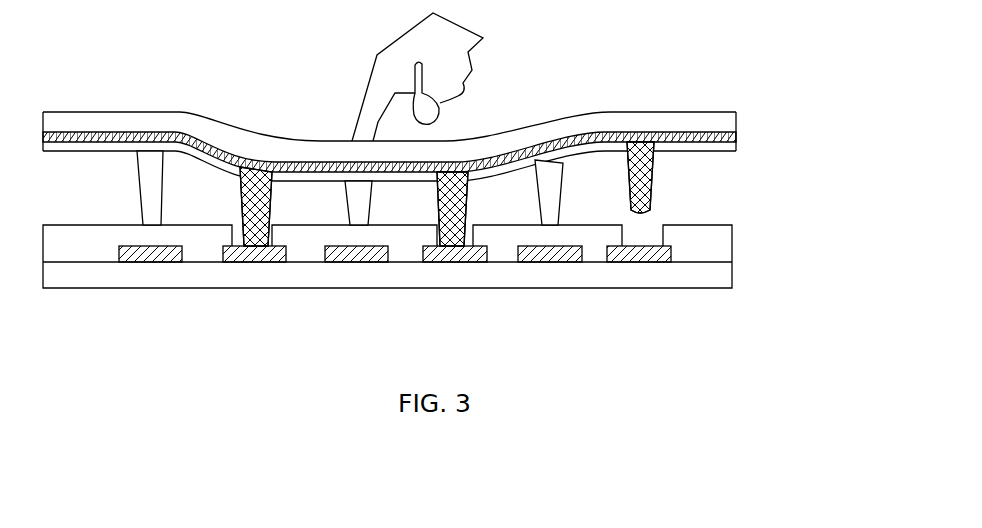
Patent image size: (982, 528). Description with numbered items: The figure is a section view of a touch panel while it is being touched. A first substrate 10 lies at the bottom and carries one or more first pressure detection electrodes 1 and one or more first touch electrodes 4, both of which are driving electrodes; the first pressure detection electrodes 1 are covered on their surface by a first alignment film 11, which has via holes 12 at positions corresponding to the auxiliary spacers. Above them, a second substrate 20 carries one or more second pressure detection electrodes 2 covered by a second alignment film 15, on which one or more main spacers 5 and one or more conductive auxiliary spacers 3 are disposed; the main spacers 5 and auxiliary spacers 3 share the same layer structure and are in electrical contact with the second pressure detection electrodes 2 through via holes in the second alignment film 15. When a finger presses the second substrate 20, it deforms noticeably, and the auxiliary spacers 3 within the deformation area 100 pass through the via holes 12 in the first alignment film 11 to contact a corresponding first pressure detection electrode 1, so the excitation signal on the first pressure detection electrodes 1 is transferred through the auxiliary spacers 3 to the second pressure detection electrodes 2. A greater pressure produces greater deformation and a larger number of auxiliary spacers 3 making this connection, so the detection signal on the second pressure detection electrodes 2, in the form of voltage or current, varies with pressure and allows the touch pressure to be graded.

The deformation area 100 is at (501, 99).
The second substrate 20 is at (703, 118).
The second pressure detection electrode 2 is at (703, 137).
The second alignment film 15 is at (718, 148).
The main spacer 5 is at (148, 182).
The conductive auxiliary spacer 3 is at (637, 190).
The via hole 12 is at (650, 226).
The first alignment film 11 is at (705, 240).
The first substrate 10 is at (700, 278).
The first touch electrode 4 is at (150, 262).
The first pressure detection electrode 1 is at (247, 262).